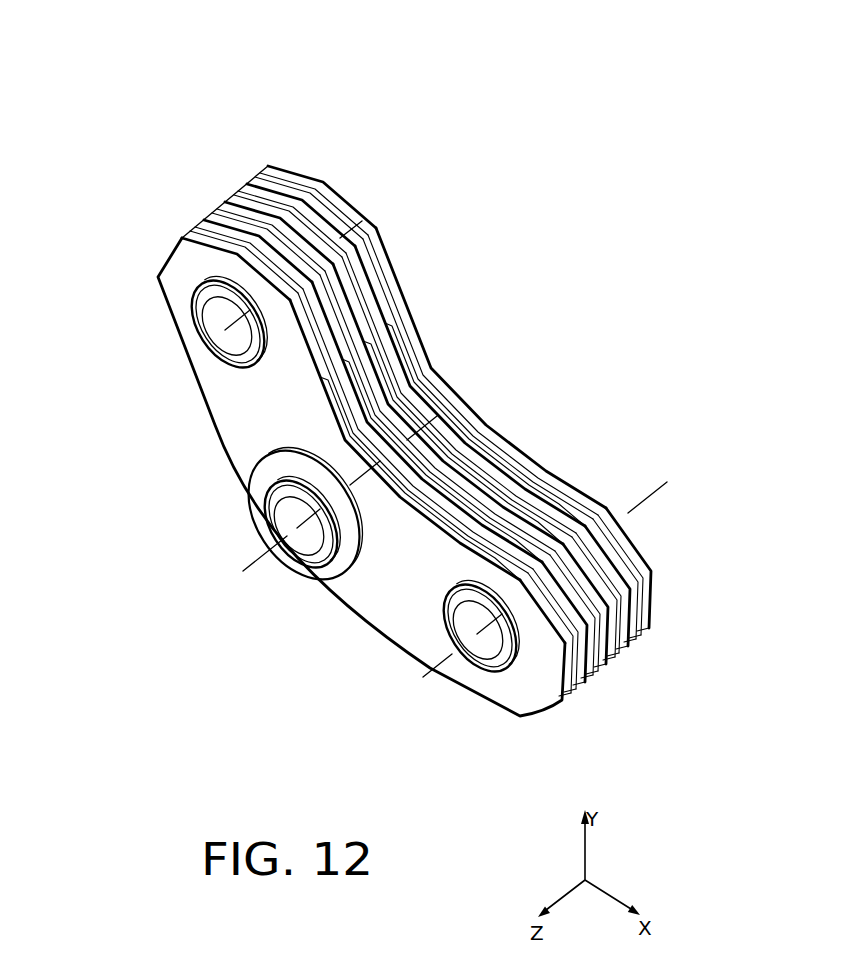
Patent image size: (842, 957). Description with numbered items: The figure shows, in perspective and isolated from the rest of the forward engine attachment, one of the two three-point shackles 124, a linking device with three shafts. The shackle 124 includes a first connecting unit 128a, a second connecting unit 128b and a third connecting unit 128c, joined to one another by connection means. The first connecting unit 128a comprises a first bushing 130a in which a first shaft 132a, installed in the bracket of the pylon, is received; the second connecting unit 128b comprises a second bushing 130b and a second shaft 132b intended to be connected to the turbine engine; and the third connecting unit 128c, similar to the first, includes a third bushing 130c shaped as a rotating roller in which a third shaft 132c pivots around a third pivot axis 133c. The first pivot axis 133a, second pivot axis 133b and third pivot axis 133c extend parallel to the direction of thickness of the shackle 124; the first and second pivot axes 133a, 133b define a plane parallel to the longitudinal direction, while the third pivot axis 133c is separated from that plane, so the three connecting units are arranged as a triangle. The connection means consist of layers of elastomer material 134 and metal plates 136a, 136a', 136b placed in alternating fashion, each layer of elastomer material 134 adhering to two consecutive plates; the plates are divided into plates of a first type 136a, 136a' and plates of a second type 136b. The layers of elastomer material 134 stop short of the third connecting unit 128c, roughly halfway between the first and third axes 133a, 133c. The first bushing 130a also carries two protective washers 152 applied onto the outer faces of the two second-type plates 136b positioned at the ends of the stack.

The three-point shackle 124 is at (310, 70).
The plate of a first type 136a is at (228, 187).
The plate of a first type 136a' is at (244, 207).
The plate of a second type 136b is at (182, 238).
The first pivot axis 133a is at (462, 392).
The second pivot axis 133b is at (642, 503).
The third pivot axis 133c is at (388, 197).
The layer of elastomer material 134 is at (570, 673).
The first connecting unit 128a is at (290, 548).
The second connecting unit 128b is at (470, 660).
The third connecting unit 128c is at (214, 354).
The first bushing 130a is at (340, 562).
The second bushing 130b is at (523, 648).
The third bushing 130c is at (258, 385).
The first shaft 132a is at (312, 545).
The second shaft 132b is at (492, 665).
The third shaft 132c is at (226, 362).
The protective washer 152 is at (378, 568).